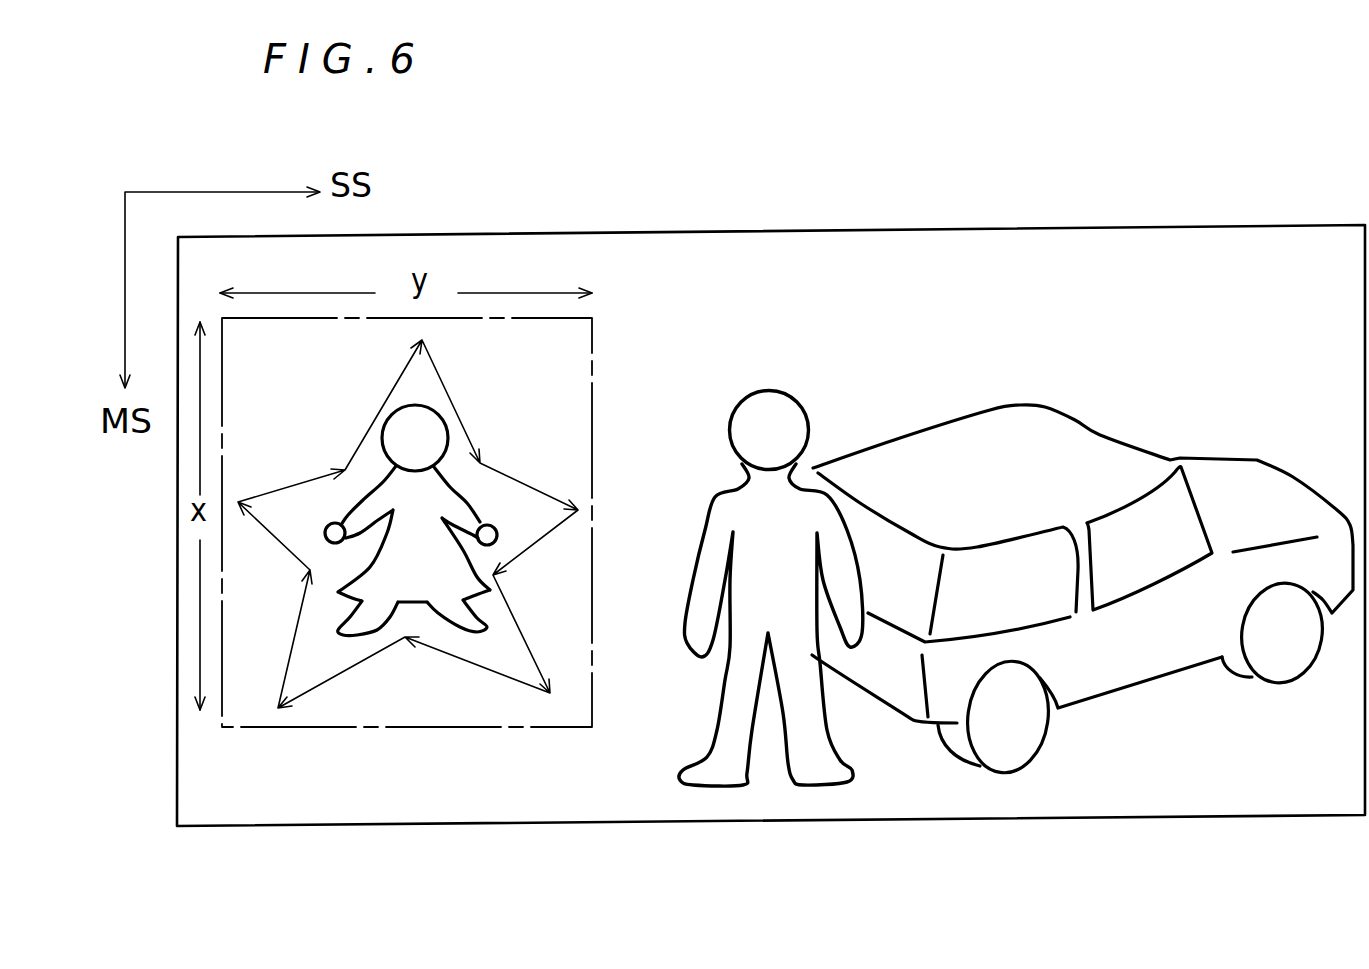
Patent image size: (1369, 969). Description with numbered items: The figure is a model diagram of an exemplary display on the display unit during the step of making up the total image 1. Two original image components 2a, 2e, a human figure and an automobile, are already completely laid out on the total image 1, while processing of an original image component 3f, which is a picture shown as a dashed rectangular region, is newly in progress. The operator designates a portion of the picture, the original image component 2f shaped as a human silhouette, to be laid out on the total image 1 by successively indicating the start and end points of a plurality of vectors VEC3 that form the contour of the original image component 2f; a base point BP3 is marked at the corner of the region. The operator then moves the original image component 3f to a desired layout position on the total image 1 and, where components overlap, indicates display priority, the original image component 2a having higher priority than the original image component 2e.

The total image 1 is at (642, 821).
The original image component 2a is at (728, 421).
The original image component 2e is at (1142, 670).
The original image component 2f is at (408, 524).
The original image component 3f is at (592, 695).
The base point BP3 is at (253, 758).
The vectors VEC3 is at (448, 397).